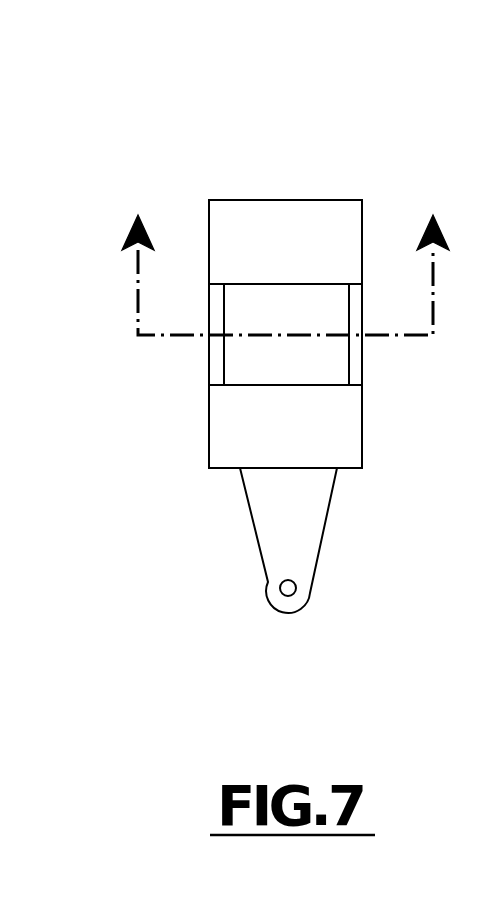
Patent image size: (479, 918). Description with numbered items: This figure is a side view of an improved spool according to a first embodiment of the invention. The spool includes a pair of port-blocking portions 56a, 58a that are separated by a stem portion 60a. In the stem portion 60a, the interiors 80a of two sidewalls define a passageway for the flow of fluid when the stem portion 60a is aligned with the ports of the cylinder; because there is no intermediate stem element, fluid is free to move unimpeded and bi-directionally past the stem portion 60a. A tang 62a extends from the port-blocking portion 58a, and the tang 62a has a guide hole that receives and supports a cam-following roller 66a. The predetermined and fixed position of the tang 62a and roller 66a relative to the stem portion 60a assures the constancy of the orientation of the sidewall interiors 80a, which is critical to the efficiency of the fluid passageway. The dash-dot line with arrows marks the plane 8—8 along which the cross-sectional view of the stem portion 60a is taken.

The plane 8— 8 is at (283, 275).
The port-blocking portion 56a is at (300, 232).
The port-blocking portion 58a is at (233, 419).
The stem portion 60a is at (218, 376).
The tang 62a is at (305, 524).
The cam-following roller 66a is at (281, 585).
The sidewall interiors 80a is at (233, 303).